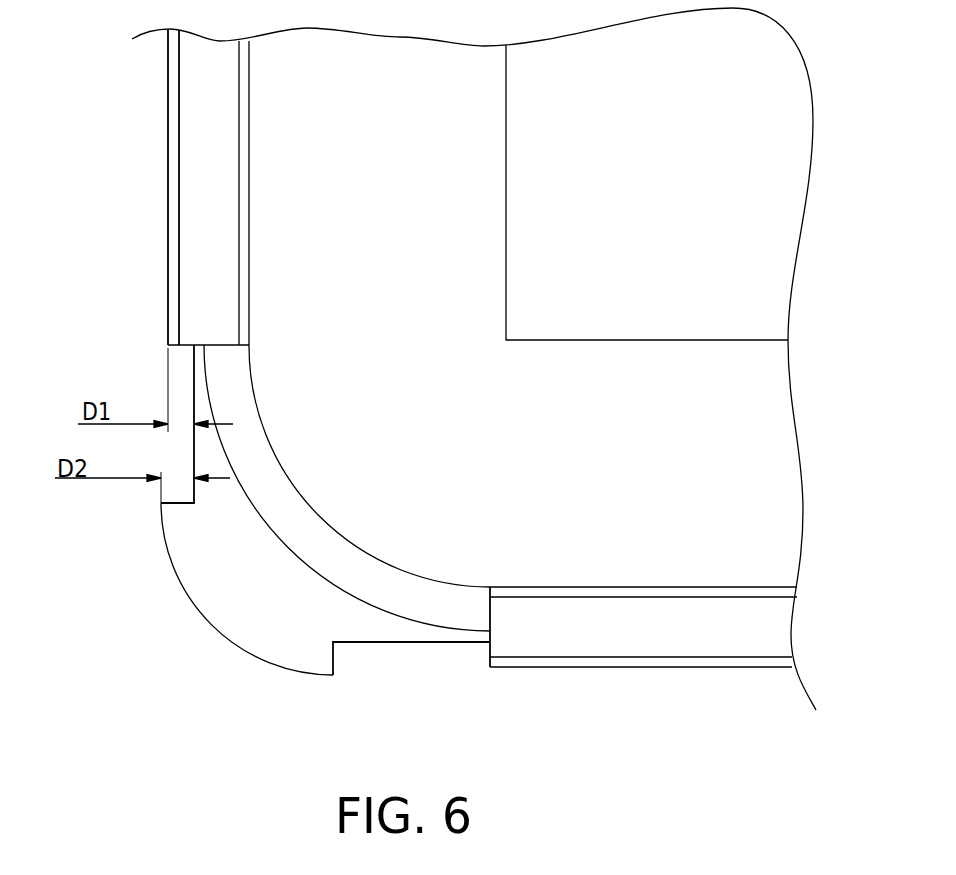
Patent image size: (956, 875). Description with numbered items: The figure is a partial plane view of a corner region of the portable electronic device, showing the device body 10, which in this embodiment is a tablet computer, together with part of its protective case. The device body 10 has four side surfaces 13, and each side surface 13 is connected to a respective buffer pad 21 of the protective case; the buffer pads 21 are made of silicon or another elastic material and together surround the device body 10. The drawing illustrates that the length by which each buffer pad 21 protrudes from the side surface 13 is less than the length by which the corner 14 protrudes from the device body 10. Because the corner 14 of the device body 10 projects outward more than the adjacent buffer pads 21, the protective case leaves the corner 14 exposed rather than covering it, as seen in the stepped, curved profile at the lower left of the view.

The device body 10 is at (746, 485).
The side surface 13 is at (194, 453).
The corner 14 is at (221, 620).
The buffer pad 21 is at (193, 222).